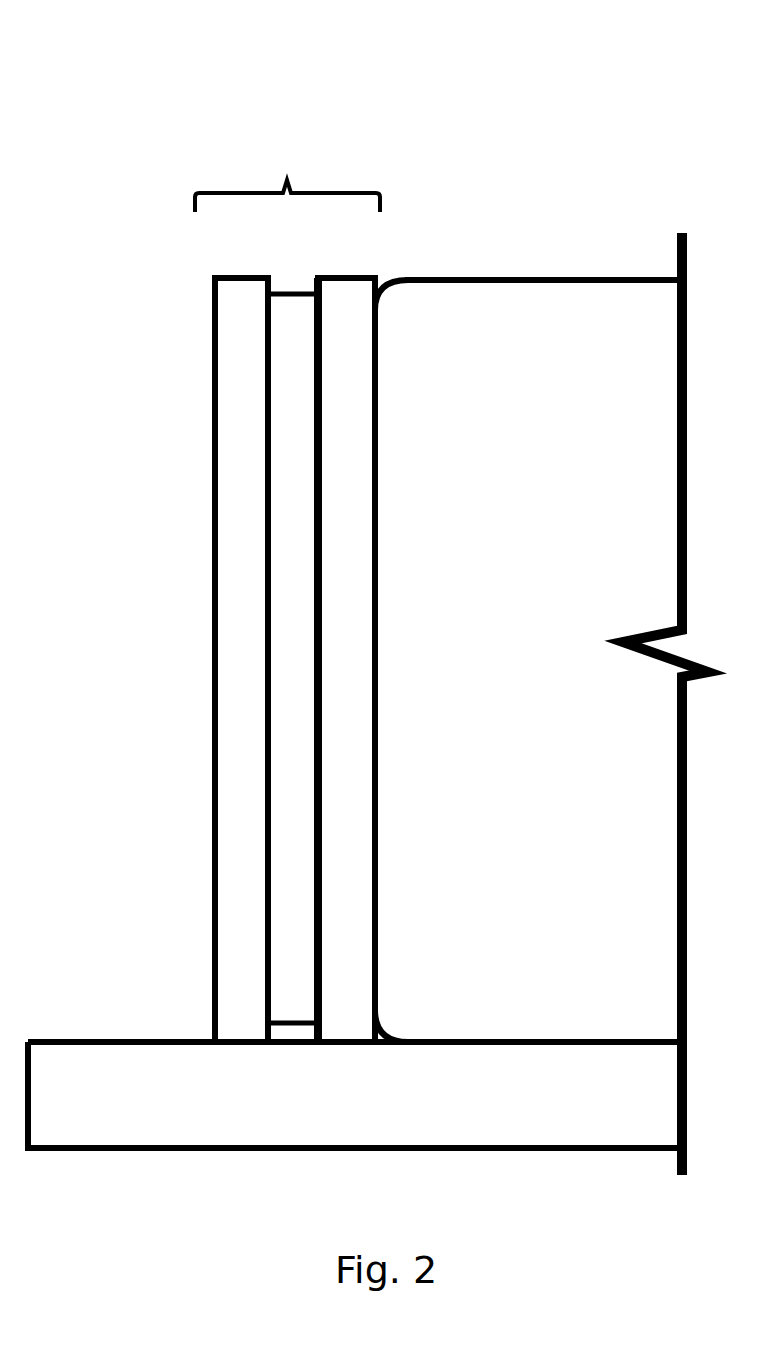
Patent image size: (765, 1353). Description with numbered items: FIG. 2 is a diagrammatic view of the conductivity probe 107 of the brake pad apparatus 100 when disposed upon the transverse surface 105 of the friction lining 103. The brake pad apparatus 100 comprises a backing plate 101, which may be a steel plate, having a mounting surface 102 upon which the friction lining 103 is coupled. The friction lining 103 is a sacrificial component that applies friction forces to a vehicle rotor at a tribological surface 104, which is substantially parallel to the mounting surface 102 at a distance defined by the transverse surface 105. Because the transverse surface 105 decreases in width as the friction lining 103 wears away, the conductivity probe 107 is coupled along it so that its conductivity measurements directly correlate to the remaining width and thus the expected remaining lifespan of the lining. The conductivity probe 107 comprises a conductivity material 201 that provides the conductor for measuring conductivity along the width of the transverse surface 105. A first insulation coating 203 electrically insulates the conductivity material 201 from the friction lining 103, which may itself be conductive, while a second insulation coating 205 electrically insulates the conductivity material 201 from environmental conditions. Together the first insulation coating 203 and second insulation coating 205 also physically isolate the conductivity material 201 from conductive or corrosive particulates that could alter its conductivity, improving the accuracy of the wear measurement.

The brake pad apparatus 100 is at (65, 63).
The backing plate 101 is at (115, 1112).
The mounting surface 102 is at (125, 1040).
The friction lining 103 is at (610, 409).
The tribological surface 104 is at (622, 279).
The transverse surface 105 is at (384, 266).
The conductivity probe 107 is at (287, 168).
The conductivity material 201 is at (293, 293).
The first insulation coating 203 is at (343, 277).
The second insulation coating 205 is at (243, 277).